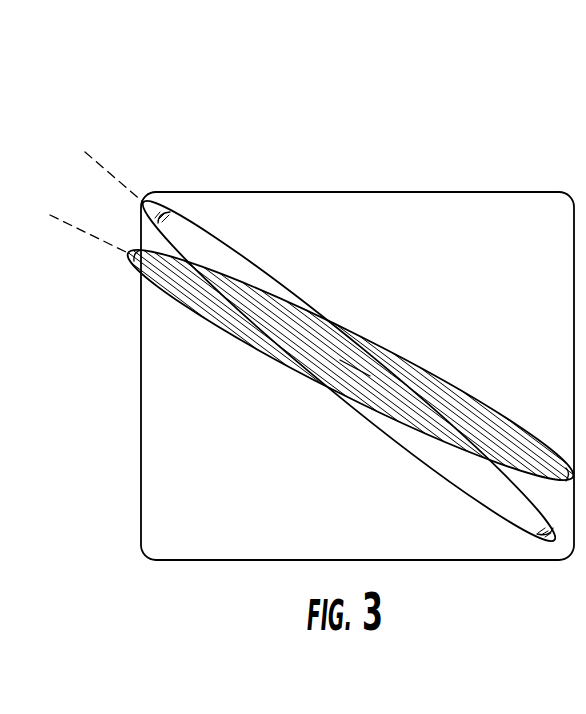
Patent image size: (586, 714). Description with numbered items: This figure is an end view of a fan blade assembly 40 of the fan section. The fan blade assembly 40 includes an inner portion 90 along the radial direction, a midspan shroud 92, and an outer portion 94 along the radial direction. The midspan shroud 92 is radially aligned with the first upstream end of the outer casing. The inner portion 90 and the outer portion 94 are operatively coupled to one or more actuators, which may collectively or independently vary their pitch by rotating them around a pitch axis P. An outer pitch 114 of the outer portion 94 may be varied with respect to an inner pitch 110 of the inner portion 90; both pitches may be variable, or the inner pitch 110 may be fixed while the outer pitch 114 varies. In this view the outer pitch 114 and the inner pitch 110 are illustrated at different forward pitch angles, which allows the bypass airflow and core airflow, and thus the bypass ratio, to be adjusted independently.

The fan blade assembly 40 is at (343, 126).
The midspan shroud 92 is at (413, 193).
The inner portion 90 is at (204, 226).
The outer portion 94 is at (517, 432).
The pitch axis P is at (358, 370).
The inner pitch 110 is at (107, 171).
The outer pitch 114 is at (87, 233).